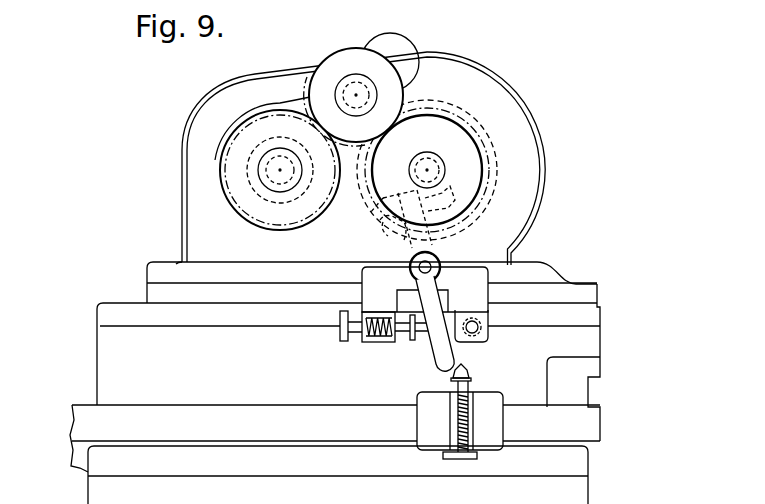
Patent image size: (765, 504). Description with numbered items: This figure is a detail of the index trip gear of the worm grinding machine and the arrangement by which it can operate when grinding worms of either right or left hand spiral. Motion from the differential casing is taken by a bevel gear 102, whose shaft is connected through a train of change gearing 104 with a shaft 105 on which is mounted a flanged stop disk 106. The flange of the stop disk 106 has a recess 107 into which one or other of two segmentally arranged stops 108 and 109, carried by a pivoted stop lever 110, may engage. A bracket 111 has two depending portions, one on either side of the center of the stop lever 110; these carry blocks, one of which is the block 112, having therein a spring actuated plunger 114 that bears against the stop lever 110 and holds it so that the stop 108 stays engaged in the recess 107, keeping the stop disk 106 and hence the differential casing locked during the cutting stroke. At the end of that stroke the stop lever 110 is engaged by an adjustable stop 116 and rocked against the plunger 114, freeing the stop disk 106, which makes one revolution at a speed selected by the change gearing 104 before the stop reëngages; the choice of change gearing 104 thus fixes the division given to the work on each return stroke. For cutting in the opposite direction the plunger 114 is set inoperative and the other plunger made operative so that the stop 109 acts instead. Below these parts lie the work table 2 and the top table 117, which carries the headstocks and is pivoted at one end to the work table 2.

The work table 2 is at (335, 394).
The bevel gear 102 is at (268, 194).
The change gearing 104 is at (337, 56).
The shaft 105 is at (437, 160).
The flanged stop disk 106 is at (492, 163).
The recess 107 is at (375, 212).
The stop 108 is at (383, 222).
The stop 109 is at (470, 208).
The pivoted stop lever 110 is at (413, 257).
The bracket 111 is at (372, 271).
The block 112 is at (361, 343).
The spring actuated plunger 114 is at (421, 336).
The adjustable stop 116 is at (472, 371).
The top table 117 is at (299, 270).